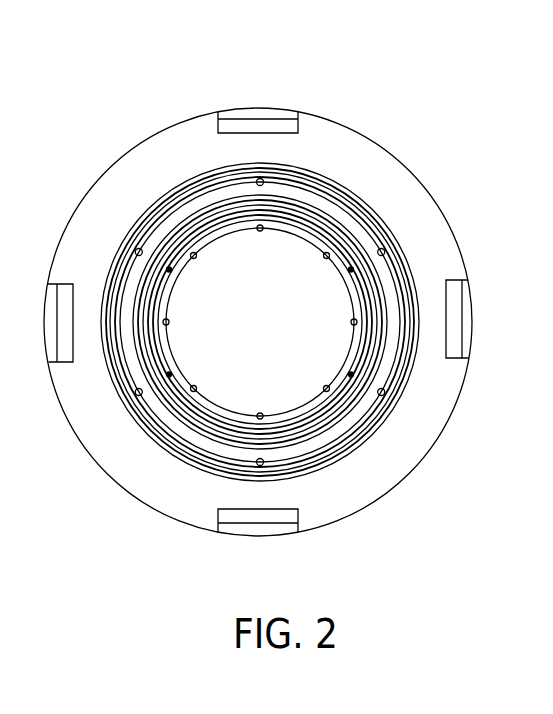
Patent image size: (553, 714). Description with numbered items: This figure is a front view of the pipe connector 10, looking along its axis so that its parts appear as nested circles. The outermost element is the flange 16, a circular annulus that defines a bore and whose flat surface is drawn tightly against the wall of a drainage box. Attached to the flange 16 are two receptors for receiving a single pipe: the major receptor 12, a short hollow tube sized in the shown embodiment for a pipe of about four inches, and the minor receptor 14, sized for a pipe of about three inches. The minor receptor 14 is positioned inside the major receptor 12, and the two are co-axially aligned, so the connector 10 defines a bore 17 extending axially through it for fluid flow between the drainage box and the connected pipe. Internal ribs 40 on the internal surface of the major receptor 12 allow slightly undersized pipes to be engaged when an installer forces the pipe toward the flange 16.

The pipe connector 10 is at (362, 47).
The major receptor 12 is at (410, 265).
The minor receptor 14 is at (383, 365).
The flange 16 is at (402, 179).
The bore 17 is at (211, 257).
The internal ribs 40 is at (261, 178).